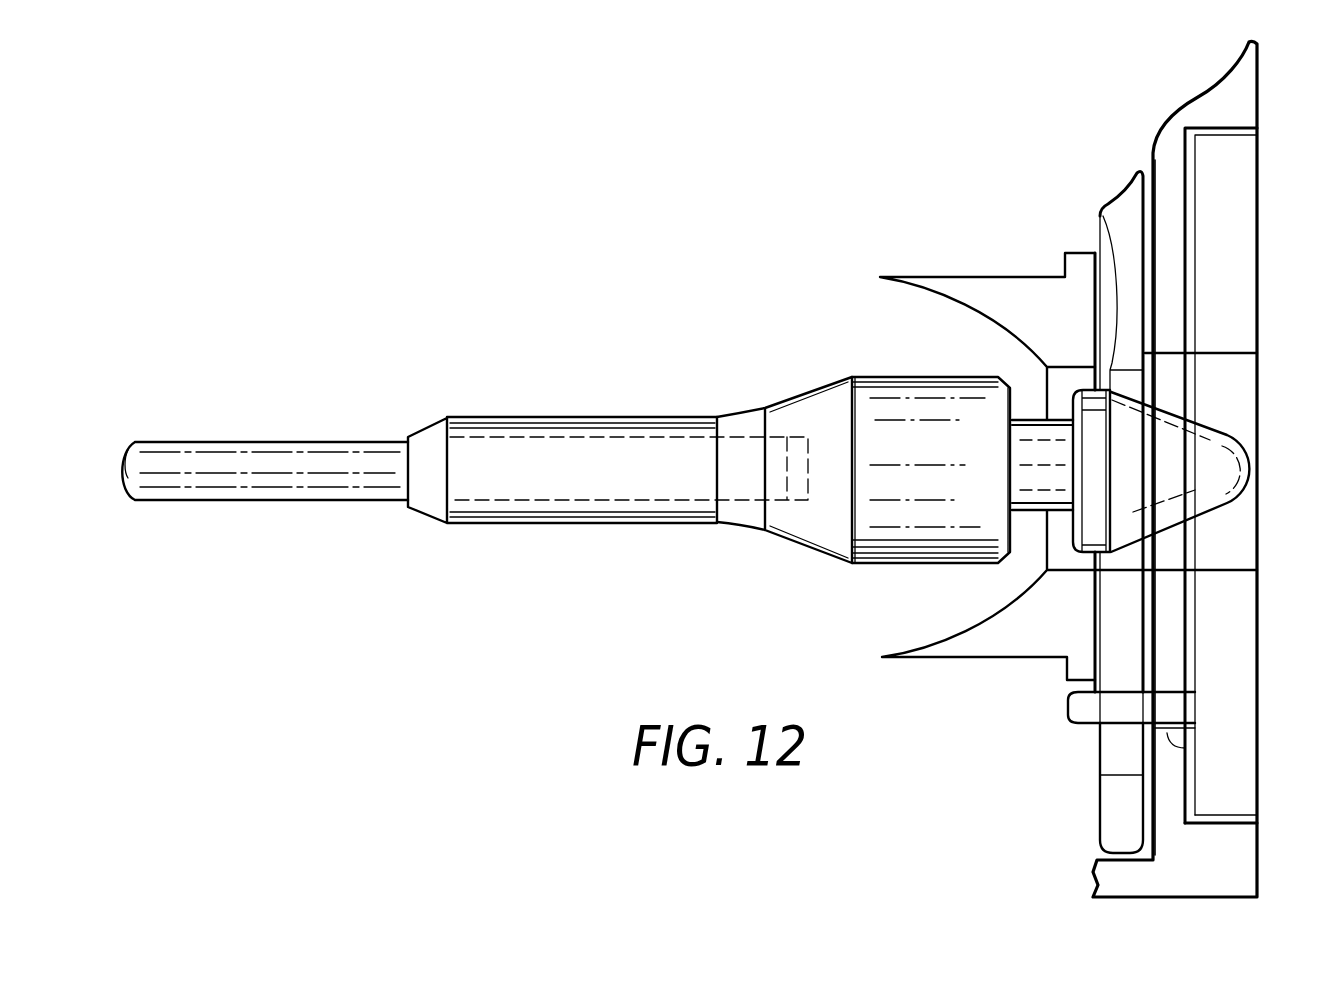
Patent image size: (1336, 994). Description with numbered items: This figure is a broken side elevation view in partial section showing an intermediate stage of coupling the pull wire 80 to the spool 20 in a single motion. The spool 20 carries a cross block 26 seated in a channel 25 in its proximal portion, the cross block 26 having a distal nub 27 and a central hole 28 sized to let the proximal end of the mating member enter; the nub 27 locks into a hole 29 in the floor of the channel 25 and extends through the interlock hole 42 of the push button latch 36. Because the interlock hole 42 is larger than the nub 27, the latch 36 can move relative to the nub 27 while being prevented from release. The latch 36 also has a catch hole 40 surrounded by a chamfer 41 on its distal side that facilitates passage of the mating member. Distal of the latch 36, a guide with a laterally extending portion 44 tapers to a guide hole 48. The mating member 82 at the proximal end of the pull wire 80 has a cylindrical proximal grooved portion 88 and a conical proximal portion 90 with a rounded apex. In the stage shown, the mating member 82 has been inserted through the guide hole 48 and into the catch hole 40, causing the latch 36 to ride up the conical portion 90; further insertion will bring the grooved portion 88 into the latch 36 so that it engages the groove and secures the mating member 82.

The spool 20 is at (1230, 92).
The channel 25 is at (1258, 824).
The cross block 26 is at (1245, 180).
The distal nub 27 is at (1080, 708).
The central hole 28 is at (1240, 372).
The hole 29 is at (1180, 748).
The push button latch 36 is at (1122, 212).
The catch hole 40 is at (1133, 551).
The chamfer 41 is at (1110, 350).
The interlock hole 42 is at (1115, 752).
The laterally extending portion 44 is at (1028, 300).
The guide hole 48 is at (1060, 545).
The pull wire 80 is at (262, 440).
The mating member 82 is at (856, 376).
The cylindrical proximal grooved portion 88 is at (1030, 420).
The conical proximal portion 90 is at (1207, 455).